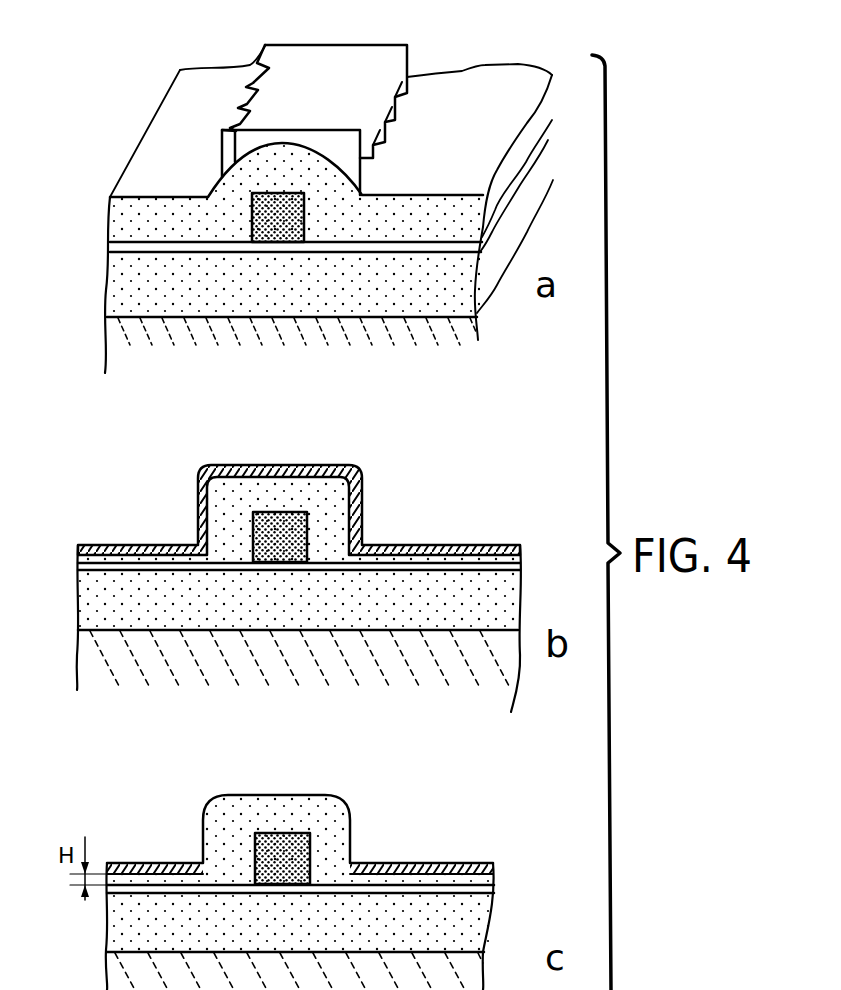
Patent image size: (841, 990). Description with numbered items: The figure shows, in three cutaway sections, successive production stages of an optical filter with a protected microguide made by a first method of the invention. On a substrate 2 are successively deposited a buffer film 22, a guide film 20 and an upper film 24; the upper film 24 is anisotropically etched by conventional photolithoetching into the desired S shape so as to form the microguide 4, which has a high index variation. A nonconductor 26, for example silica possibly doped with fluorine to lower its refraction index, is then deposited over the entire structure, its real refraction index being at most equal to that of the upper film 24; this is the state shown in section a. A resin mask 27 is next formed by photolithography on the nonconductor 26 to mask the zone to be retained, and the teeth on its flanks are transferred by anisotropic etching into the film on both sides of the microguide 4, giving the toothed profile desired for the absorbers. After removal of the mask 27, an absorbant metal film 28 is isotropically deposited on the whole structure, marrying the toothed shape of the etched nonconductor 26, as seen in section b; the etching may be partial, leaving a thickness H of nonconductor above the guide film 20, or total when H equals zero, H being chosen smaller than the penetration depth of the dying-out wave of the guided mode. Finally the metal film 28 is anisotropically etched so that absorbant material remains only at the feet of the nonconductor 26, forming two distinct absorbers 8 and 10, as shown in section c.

The substrate 2 is at (117, 347).
The microguide 4 is at (243, 232).
The absorber 8 is at (150, 866).
The absorber 10 is at (435, 863).
The guide film 20 is at (110, 250).
The buffer film 22 is at (117, 290).
The upper film 24 is at (288, 195).
The nonconductor 26 is at (147, 213).
The resin mask 27 is at (228, 150).
The absorbant metal film 28 is at (136, 545).